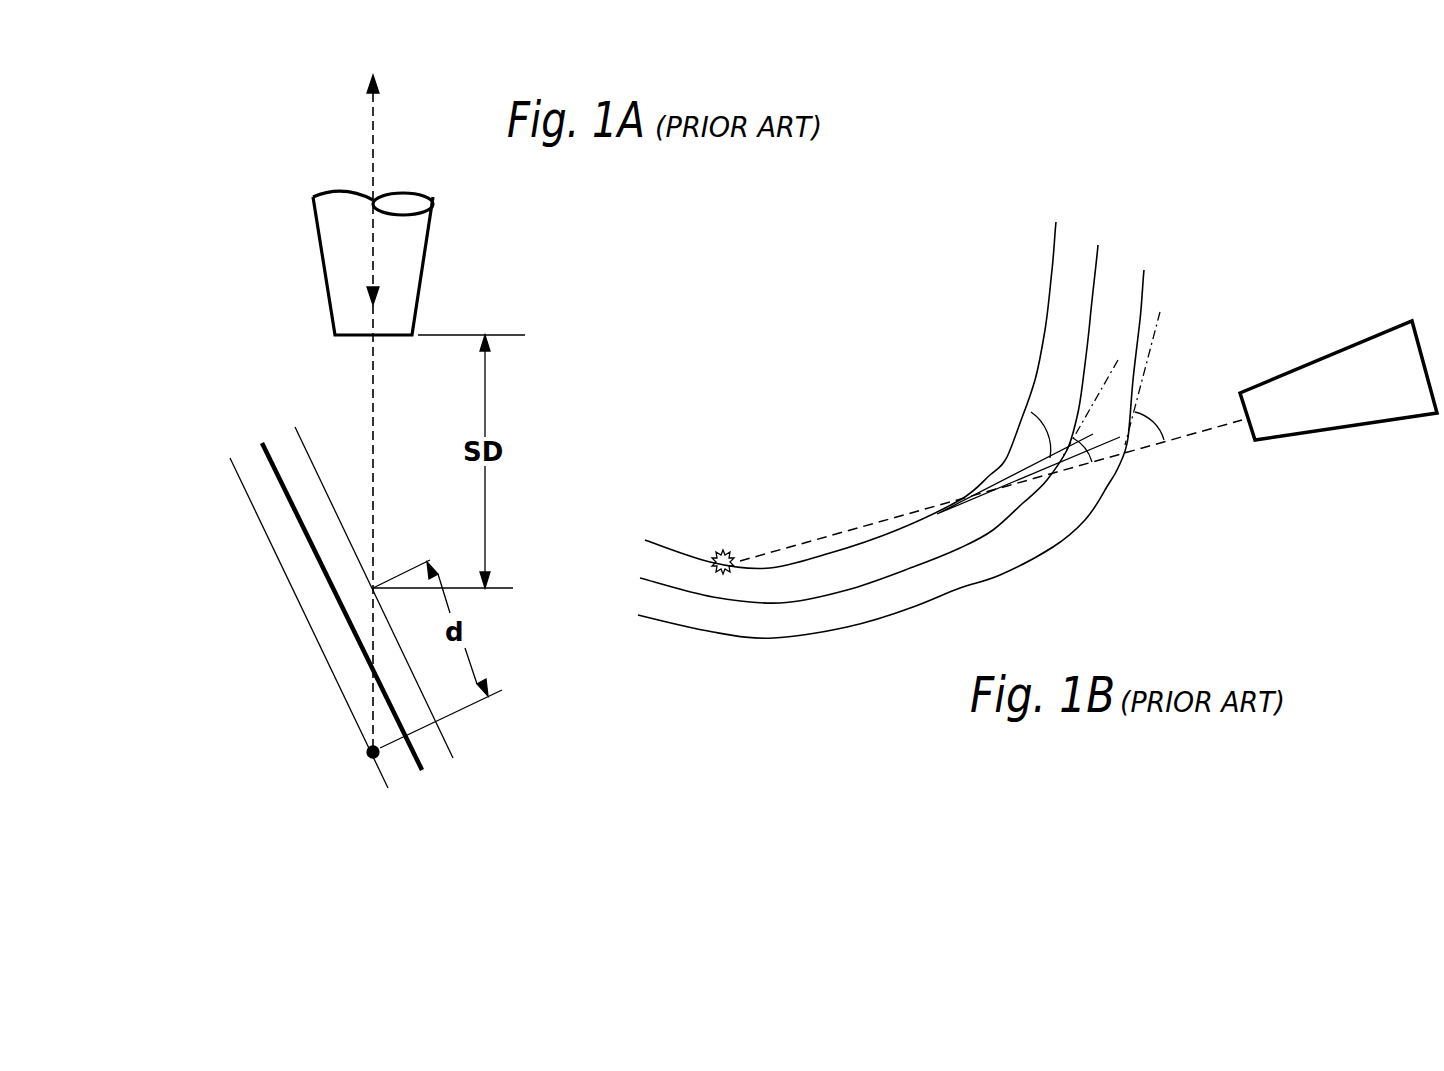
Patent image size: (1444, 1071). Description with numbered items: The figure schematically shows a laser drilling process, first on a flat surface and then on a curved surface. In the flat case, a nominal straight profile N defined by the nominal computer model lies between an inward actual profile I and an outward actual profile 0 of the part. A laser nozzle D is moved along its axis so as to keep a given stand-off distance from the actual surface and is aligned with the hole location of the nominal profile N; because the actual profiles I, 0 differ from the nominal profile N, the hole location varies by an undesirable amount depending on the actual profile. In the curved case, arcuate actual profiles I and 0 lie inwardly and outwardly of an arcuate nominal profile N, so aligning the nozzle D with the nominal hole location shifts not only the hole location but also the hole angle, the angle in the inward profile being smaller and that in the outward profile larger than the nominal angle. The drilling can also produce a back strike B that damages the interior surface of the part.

In FIG. 1A, the laser nozzle D is at (397, 253).
In FIG. 1B, the laser nozzle D is at (1365, 425).
In FIG. 1A, the outward actual profile 0 is at (313, 458).
In FIG. 1B, the outward actual profile 0 is at (1143, 290).
In FIG. 1A, the nominal profile N is at (317, 562).
In FIG. 1B, the nominal profile N is at (1095, 280).
In FIG. 1A, the inward actual profile I is at (254, 508).
In FIG. 1B, the inward actual profile I is at (1048, 290).
In FIG. 1B, the back strike B is at (725, 546).